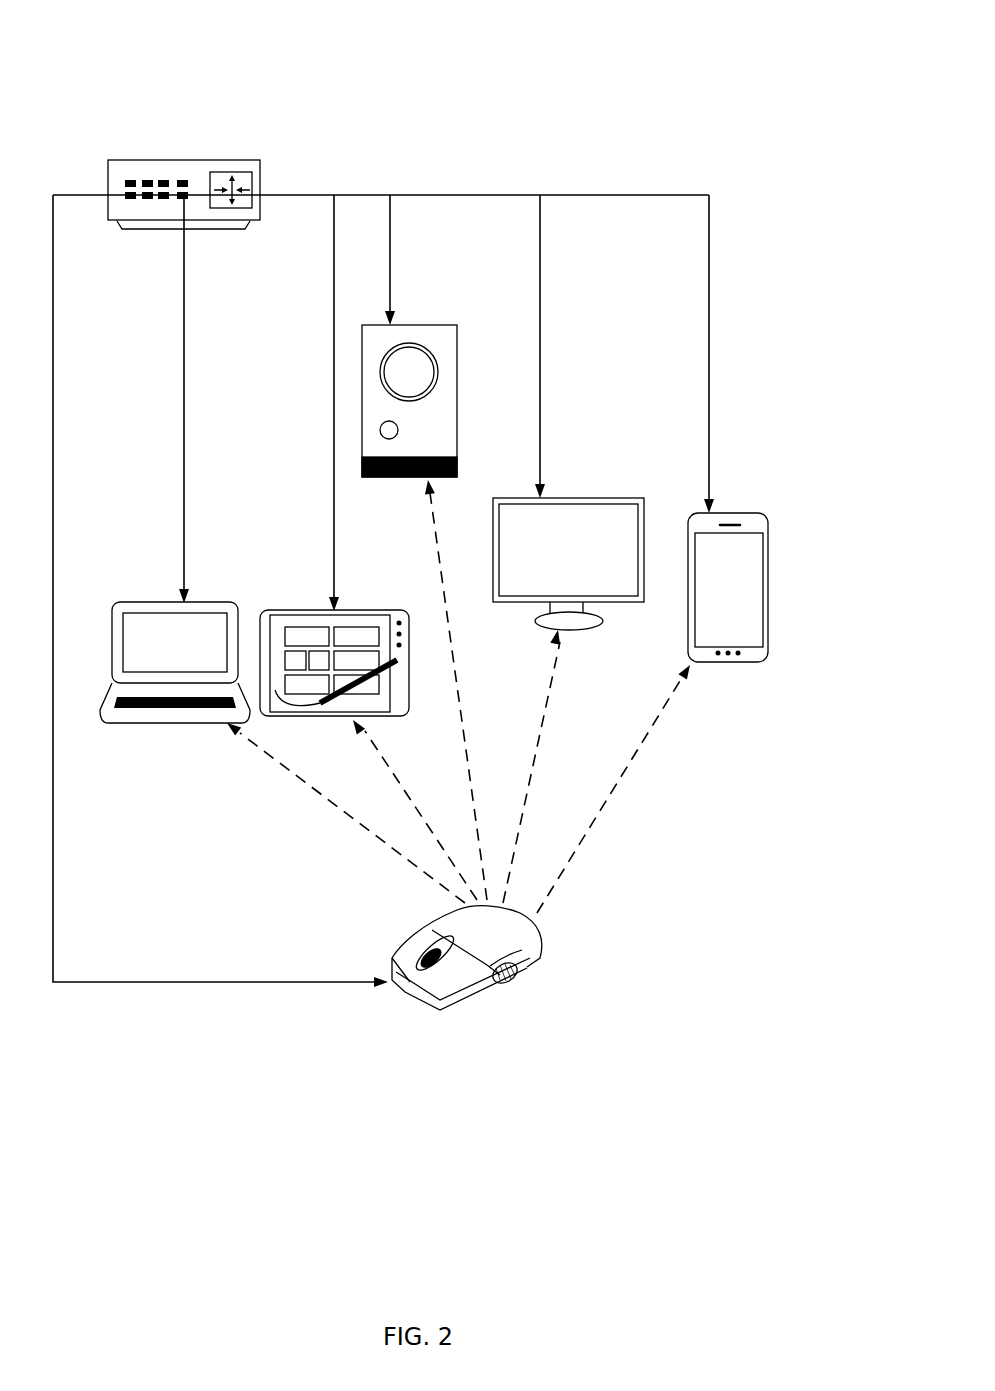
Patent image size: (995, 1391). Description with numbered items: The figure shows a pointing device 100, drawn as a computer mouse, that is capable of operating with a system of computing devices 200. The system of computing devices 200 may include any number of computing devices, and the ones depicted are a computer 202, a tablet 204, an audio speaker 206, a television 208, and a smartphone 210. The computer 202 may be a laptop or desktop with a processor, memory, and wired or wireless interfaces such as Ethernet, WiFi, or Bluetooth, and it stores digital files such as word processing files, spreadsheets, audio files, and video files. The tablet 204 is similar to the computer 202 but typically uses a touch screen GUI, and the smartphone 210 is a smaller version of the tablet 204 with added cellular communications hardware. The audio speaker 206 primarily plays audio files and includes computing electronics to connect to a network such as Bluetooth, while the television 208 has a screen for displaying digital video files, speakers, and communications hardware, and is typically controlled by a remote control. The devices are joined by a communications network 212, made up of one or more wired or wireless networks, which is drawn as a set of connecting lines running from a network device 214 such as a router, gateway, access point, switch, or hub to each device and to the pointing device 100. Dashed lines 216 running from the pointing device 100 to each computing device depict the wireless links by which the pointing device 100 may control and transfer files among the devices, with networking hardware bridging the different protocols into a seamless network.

The pointing device 100 is at (548, 958).
The system of computing devices 200 is at (619, 72).
The computer 202 is at (138, 592).
The tablet 204 is at (297, 600).
The audio speaker 206 is at (429, 316).
The television 208 is at (589, 487).
The smartphone 210 is at (739, 504).
The communications network 212 is at (494, 184).
The network device 214 is at (166, 152).
The wireless connection 216 is at (625, 780).